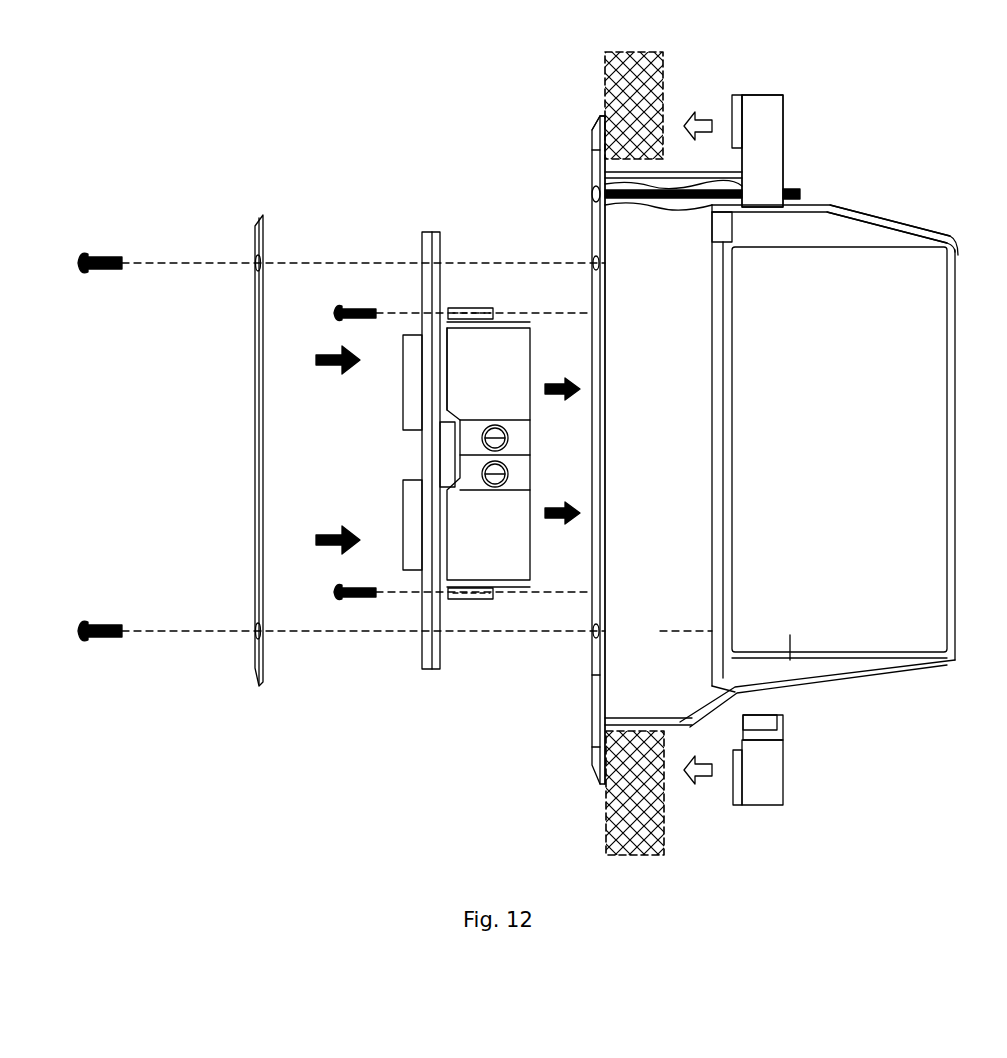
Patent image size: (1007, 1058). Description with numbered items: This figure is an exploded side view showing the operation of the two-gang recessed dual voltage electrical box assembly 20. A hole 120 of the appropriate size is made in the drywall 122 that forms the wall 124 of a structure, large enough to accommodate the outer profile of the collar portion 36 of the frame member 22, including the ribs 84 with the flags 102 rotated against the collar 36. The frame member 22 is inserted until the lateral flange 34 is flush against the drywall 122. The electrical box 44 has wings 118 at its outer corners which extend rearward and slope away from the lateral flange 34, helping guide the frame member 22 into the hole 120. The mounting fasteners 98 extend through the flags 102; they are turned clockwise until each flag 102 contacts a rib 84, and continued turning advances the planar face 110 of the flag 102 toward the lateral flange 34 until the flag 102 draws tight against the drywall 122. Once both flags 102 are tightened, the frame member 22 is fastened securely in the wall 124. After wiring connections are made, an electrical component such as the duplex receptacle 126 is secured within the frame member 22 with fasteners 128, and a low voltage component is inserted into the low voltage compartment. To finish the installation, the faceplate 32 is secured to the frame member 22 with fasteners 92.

The recessed electrical box assembly 20 is at (545, 198).
The frame member 22 is at (793, 640).
The faceplate 32 is at (255, 362).
The lateral flange 34 is at (596, 672).
The collar 36 is at (673, 445).
The electrical box 44 is at (835, 432).
The rib 84 is at (688, 172).
The fastener 92 is at (100, 258).
The mounting fastener 98 is at (662, 200).
The flag 102 is at (765, 95).
The planar face 110 is at (733, 782).
The wing 118 is at (865, 210).
The hole 120 is at (604, 735).
The drywall 122 is at (632, 85).
The wall 124 is at (606, 802).
The duplex receptacle 126 is at (466, 450).
The fastener 128 is at (350, 305).